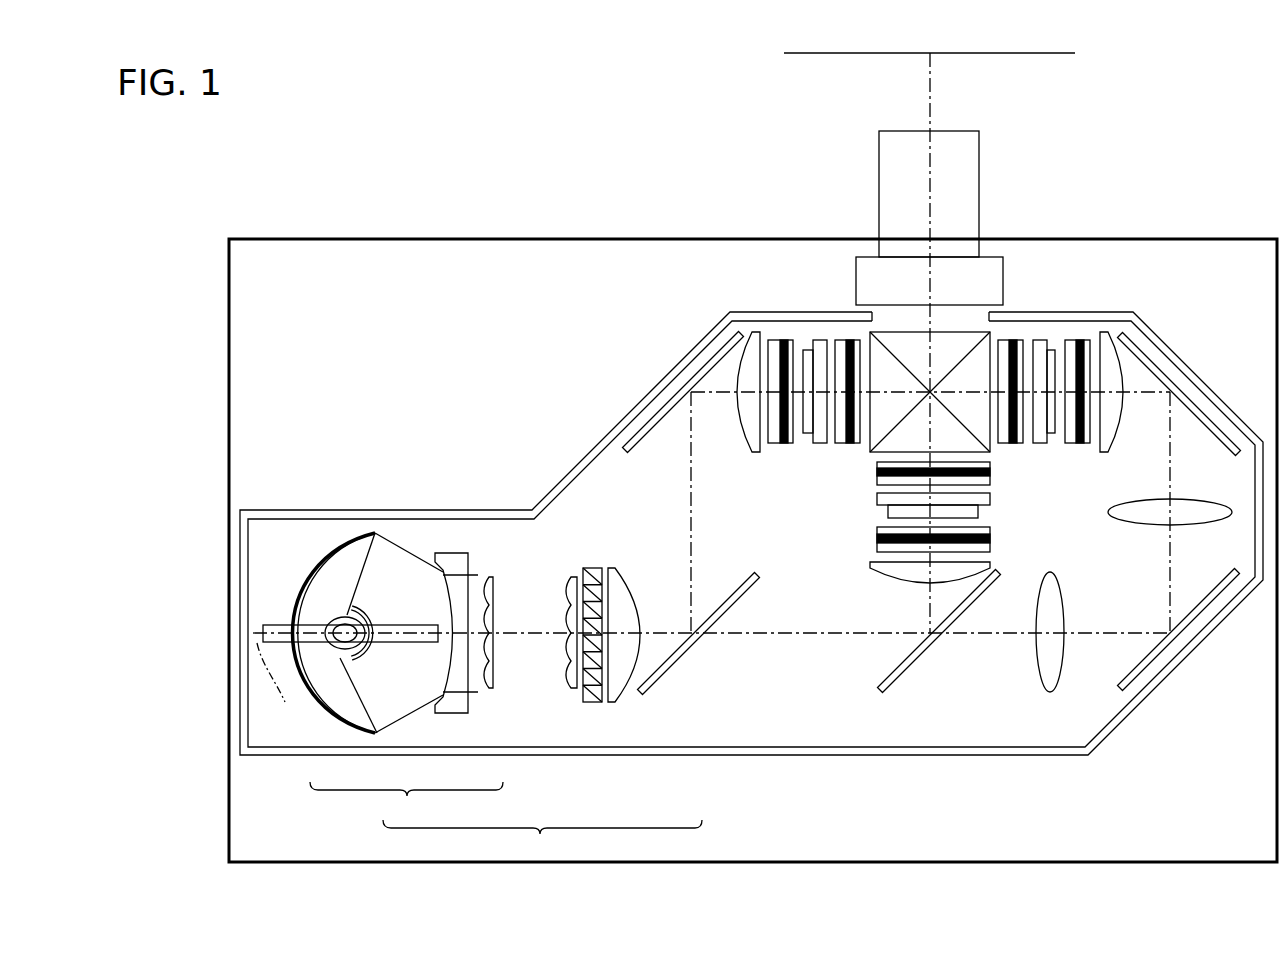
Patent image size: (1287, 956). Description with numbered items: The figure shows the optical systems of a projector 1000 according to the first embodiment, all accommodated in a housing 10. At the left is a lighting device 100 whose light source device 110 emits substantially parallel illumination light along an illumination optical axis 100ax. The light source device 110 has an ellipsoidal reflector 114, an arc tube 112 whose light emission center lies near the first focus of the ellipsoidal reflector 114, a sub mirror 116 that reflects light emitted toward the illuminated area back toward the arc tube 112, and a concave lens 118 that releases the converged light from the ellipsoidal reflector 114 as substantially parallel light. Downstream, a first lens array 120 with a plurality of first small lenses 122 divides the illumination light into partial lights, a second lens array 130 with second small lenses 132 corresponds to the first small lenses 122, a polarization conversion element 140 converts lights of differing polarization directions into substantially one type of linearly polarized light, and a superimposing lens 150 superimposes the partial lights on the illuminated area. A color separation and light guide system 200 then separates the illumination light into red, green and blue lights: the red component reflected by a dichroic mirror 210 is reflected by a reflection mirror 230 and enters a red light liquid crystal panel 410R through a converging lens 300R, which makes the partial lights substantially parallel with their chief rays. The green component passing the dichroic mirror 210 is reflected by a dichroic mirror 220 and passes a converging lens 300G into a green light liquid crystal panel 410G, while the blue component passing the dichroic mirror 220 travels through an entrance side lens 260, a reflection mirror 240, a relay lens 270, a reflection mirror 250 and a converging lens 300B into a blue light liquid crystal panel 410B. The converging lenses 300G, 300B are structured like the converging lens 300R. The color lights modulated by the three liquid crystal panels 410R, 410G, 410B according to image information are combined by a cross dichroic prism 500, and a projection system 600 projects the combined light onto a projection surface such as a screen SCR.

The projector 1000 is at (415, 160).
The screen SCR is at (1050, 54).
The projection system 600 is at (980, 218).
The housing 10 is at (393, 510).
The color separation and light guide system 200 is at (935, 772).
The lighting device 100 is at (542, 840).
The illumination optical axis 100ax is at (287, 685).
The light source device 110 is at (406, 802).
The arc tube 112 is at (343, 658).
The ellipsoidal reflector 114 is at (350, 722).
The sub mirror 116 is at (380, 660).
The concave lens 118 is at (450, 715).
The first lens array 120 is at (490, 693).
The first small lens 122 is at (485, 578).
The second lens array 130 is at (578, 702).
The second small lens 132 is at (568, 578).
The polarization conversion element 140 is at (590, 702).
The superimposing lens 150 is at (615, 702).
The dichroic mirror 210 is at (670, 673).
The dichroic mirror 220 is at (897, 687).
The reflection mirror 230 is at (707, 348).
The reflection mirror 240 is at (1135, 688).
The reflection mirror 250 is at (1208, 407).
The entrance side lens 260 is at (1050, 692).
The relay lens 270 is at (1232, 516).
The converging lens 300R is at (758, 453).
The converging lens 300G is at (870, 573).
The converging lens 300B is at (1103, 452).
The red light liquid crystal panel 410R is at (813, 330).
The green light liquid crystal panel 410G is at (985, 507).
The blue light liquid crystal panel 410B is at (1045, 330).
The cross dichroic prism 500 is at (872, 457).